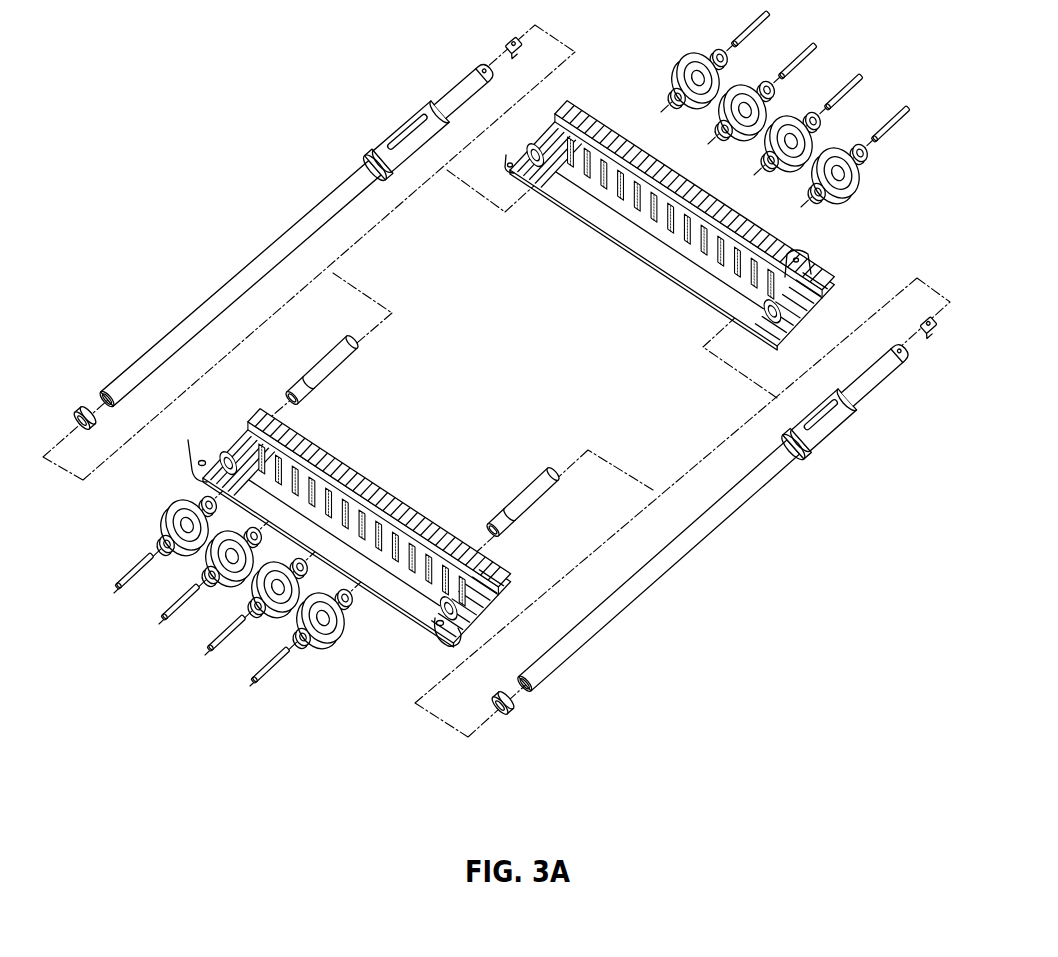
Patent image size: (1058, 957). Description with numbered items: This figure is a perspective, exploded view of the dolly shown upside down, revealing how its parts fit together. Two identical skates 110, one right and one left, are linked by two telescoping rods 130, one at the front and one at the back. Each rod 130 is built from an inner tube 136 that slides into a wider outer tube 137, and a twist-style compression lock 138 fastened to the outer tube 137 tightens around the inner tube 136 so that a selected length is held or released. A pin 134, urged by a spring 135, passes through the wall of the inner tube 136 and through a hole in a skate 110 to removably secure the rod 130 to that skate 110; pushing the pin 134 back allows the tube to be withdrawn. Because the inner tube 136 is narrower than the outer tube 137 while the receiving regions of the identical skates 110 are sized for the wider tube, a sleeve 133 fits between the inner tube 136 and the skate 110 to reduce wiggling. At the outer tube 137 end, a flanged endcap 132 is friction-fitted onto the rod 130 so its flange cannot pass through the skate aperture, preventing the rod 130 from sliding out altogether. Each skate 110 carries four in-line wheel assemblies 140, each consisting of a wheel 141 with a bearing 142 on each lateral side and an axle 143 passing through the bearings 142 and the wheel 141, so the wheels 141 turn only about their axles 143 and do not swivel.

The skate 110 is at (843, 293).
The rod 130 is at (530, 360).
The endcap 132 is at (84, 418).
The sleeve 133 is at (358, 347).
The pin 134 is at (480, 64).
The spring 135 is at (512, 38).
The inner tube 136 is at (449, 88).
The outer tube 137 is at (294, 222).
The lock 138 is at (401, 124).
The wheel assembly 140 is at (524, 349).
The wheel 141 is at (857, 191).
The bearing 142 is at (871, 156).
The axle 143 is at (910, 110).